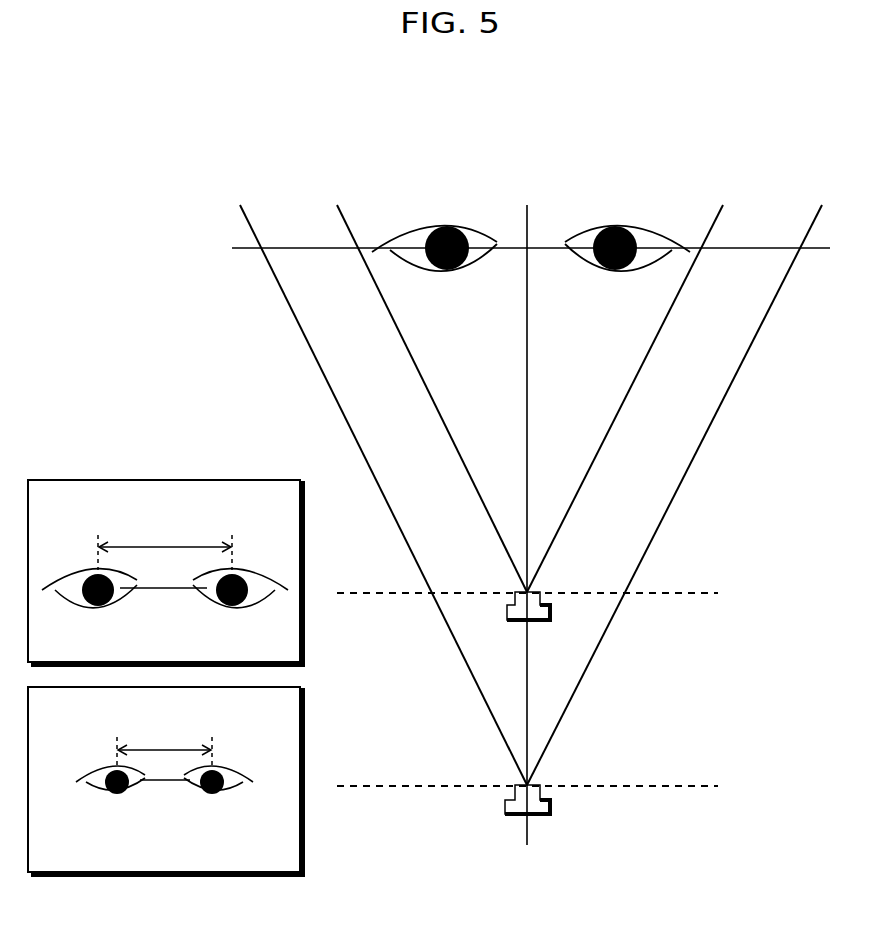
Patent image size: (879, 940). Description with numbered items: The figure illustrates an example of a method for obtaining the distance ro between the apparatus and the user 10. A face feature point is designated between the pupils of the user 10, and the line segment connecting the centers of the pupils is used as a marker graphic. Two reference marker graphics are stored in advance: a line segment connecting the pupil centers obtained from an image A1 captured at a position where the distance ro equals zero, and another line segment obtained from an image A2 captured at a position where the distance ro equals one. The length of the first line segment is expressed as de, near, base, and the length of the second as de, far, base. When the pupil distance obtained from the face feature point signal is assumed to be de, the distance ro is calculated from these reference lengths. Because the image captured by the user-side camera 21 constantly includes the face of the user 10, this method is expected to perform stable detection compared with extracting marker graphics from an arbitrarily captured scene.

The user 10 is at (417, 156).
The user-side camera 21 is at (511, 622).
The image captured at distance ro=0.0 A1 is at (70, 490).
The image captured at distance ro=1.0 A2 is at (85, 858).